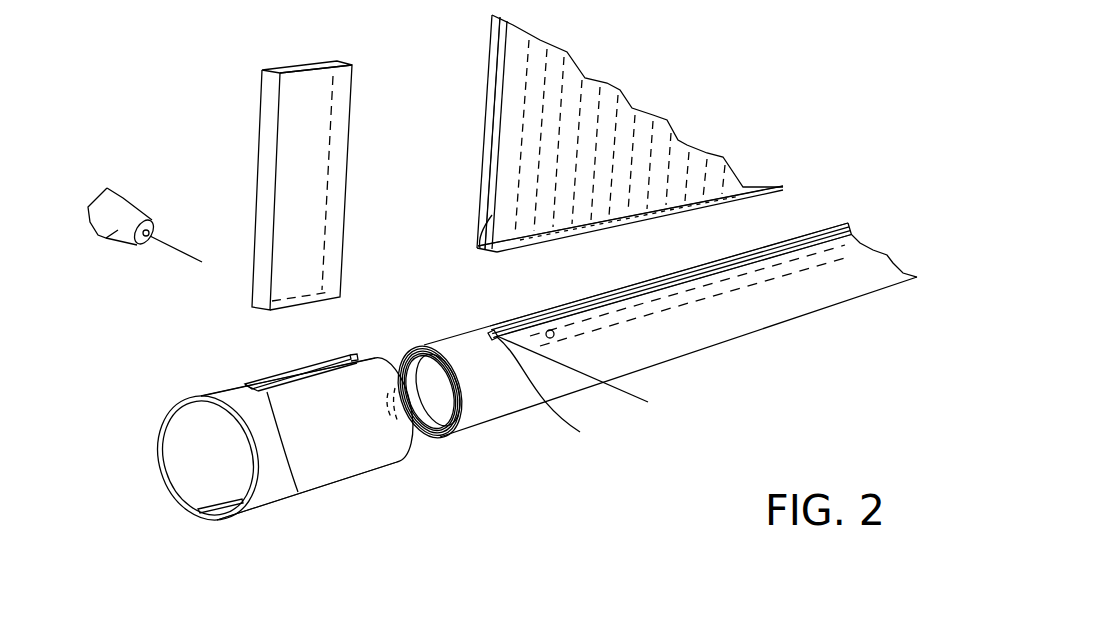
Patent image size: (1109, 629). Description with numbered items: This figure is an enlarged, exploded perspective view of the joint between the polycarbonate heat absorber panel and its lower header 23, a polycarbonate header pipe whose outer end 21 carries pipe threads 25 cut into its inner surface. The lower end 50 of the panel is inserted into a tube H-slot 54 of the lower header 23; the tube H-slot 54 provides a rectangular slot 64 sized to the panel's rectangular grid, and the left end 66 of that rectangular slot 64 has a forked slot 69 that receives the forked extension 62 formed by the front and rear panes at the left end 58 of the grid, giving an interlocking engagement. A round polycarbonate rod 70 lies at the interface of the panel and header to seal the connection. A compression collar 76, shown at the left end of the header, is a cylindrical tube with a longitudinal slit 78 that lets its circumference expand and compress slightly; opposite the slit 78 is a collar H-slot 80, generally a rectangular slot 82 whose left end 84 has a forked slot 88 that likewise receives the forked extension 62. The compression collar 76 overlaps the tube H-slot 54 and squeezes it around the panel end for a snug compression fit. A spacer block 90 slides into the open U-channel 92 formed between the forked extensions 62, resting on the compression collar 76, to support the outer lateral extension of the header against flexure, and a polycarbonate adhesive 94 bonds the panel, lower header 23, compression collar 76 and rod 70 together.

The outer end 21 is at (463, 425).
The lower header 23 is at (815, 285).
The pipe threads 25 is at (437, 347).
The lower end 50 is at (523, 248).
The tube H-slot 54 is at (587, 392).
The left end 58 is at (453, 233).
The forked extensions 62 is at (481, 217).
The rectangular slot 64 is at (747, 265).
The left end 66 is at (493, 333).
The forked slots 69 is at (554, 394).
The rod 70 is at (667, 303).
The compression collar 76 is at (220, 352).
The longitudinal slit 78 is at (223, 507).
The collar H-slot 80 is at (295, 387).
The rectangular slot 82 is at (347, 358).
The left end 84 is at (255, 357).
The forked slots 88 is at (298, 492).
The spacer block 90 is at (268, 107).
The open U-channel 92 is at (486, 148).
The polycarbonate adhesive 94 is at (157, 222).